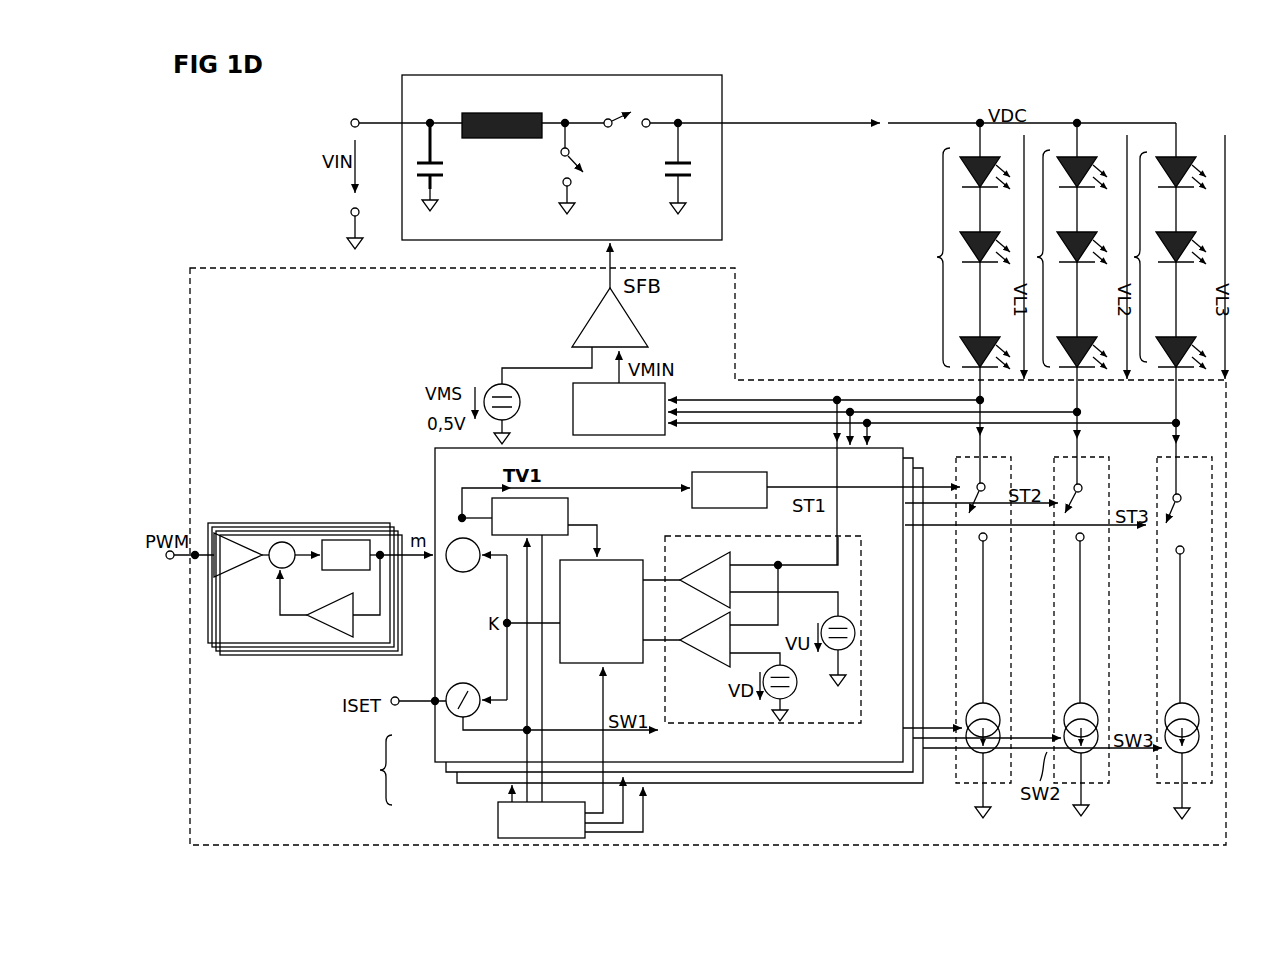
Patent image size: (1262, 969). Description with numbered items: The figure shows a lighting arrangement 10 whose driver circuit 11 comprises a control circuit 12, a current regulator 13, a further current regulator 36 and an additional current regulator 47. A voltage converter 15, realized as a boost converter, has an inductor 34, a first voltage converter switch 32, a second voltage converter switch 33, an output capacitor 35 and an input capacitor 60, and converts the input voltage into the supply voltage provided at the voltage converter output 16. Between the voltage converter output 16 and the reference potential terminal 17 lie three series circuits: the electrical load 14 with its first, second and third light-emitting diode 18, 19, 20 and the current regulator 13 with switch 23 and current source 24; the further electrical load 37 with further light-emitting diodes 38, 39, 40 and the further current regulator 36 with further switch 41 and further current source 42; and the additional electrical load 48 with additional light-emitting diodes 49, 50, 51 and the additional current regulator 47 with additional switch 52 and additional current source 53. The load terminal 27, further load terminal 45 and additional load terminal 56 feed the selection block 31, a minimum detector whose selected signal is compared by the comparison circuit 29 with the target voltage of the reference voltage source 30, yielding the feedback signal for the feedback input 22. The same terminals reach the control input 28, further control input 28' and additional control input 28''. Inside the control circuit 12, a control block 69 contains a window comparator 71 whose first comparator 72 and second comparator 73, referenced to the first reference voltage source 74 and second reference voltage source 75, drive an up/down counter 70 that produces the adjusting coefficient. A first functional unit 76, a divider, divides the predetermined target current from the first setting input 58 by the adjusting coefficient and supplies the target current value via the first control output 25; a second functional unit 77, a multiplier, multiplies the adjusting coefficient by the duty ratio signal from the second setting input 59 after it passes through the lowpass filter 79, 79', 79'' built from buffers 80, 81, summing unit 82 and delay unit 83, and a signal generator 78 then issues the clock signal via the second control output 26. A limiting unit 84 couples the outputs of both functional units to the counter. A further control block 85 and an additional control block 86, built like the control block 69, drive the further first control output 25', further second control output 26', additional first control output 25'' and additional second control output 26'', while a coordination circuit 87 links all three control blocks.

The lighting arrangement 10 is at (275, 120).
The driver circuit 11 is at (250, 268).
The control circuit 12 is at (373, 770).
The current regulator 13 is at (958, 484).
The electrical load 14 is at (931, 257).
The voltage converter 15 is at (402, 84).
The voltage converter output 16 is at (714, 120).
The reference potential terminal 17 is at (363, 240).
The first light-emitting diode 18 is at (980, 157).
The second light-emitting diode 19 is at (979, 234).
The third light-emitting diode 20 is at (979, 339).
The feedback input 22 is at (616, 248).
The switch 23 is at (986, 544).
The current source 24 is at (988, 706).
The first control output 25 is at (916, 722).
The further first control output 25' is at (965, 749).
The additional first control output 25'' is at (1014, 781).
The second control output 26 is at (863, 479).
The further second control output 26' is at (964, 515).
The additional second control output 26'' is at (1008, 538).
The load terminal 27 is at (984, 400).
The control input 28 is at (828, 430).
The further control input 28' is at (845, 461).
The additional control input 28'' is at (886, 436).
The comparison circuit 29 is at (639, 345).
The reference voltage source 30 is at (521, 405).
The selection block 31 is at (573, 427).
The first voltage converter switch 32 is at (580, 170).
The second voltage converter switch 33 is at (620, 112).
The inductor 34 is at (531, 116).
The output capacitor 35 is at (668, 160).
The further current regulator 36 is at (1054, 462).
The further electrical load 37 is at (1045, 148).
The further light-emitting diode 38 is at (1079, 157).
The further light-emitting diode 39 is at (1076, 234).
The further light-emitting diode 40 is at (1076, 339).
The further switch 41 is at (1084, 547).
The further current source 42 is at (1086, 706).
The further load terminal 45 is at (1081, 412).
The additional current regulator 47 is at (1160, 458).
The additional electrical load 48 is at (1142, 150).
The additional light-emitting diode 49 is at (1178, 158).
The additional light-emitting diode 50 is at (1175, 234).
The additional light-emitting diode 51 is at (1175, 339).
The additional switch 52 is at (1175, 508).
The additional current source 53 is at (1187, 706).
The additional load terminal 56 is at (1180, 423).
The first setting input 58 is at (391, 698).
The second setting input 59 is at (170, 561).
The input capacitor 60 is at (445, 168).
The control block 69 is at (435, 760).
The up/down counter 70 is at (643, 561).
The window comparator 71 is at (686, 538).
The first comparator 72 is at (716, 566).
The second comparator 73 is at (714, 655).
The first reference voltage source 74 is at (835, 618).
The second reference voltage source 75 is at (797, 677).
The first functional unit 76 is at (465, 683).
The second functional unit 77 is at (465, 573).
The signal generator 78 is at (692, 487).
The lowpass filter stage 79 is at (299, 567).
The lowpass filter stage 79' is at (305, 613).
The lowpass filter stage 79'' is at (311, 617).
The buffer 80 is at (228, 579).
The buffer 81 is at (326, 622).
The summing unit 82 is at (276, 545).
The delay unit 83 is at (325, 572).
The limiting unit 84 is at (568, 513).
The further control block 85 is at (446, 772).
The additional control block 86 is at (457, 783).
The coordination circuit 87 is at (498, 818).